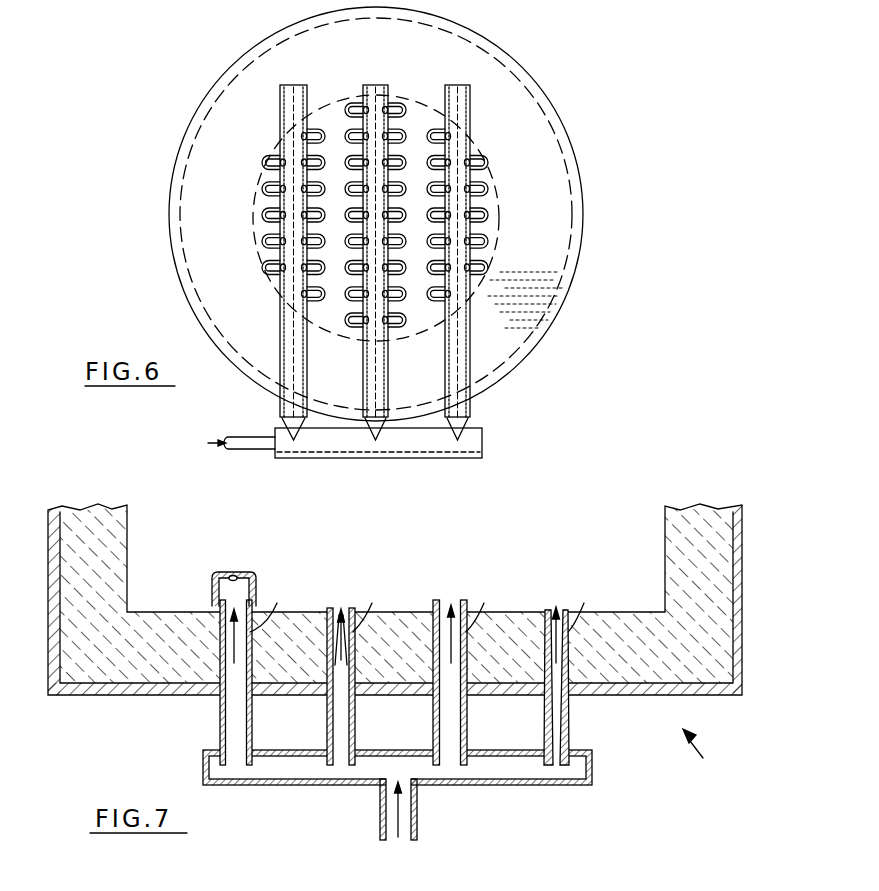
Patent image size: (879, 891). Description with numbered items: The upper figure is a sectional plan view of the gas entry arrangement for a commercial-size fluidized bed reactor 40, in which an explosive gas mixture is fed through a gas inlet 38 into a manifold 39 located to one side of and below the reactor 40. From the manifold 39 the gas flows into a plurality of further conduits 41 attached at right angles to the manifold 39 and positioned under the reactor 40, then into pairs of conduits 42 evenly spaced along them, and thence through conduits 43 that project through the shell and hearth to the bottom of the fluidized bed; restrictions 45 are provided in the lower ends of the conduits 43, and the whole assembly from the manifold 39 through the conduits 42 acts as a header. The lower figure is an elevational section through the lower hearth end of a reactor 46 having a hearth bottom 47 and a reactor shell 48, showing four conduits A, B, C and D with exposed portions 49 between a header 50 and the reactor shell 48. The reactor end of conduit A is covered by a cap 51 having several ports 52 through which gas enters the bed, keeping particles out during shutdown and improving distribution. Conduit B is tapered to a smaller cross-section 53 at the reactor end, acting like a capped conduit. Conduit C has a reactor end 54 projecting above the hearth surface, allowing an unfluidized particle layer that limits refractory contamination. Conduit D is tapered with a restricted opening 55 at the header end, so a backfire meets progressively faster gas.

In FIG. 6, the gas inlet 38 is at (248, 450).
In FIG. 6, the manifold 39 is at (383, 453).
In FIG. 6, the reactor 40 is at (541, 339).
In FIG. 6, the further conduits 41 is at (363, 364).
In FIG. 6, the pairs of conduits 42 is at (352, 111).
In FIG. 6, the conduits 43 is at (434, 136).
In FIG. 6, the restrictions 45 is at (268, 265).
In FIG. 7, the reactor 46 is at (709, 755).
In FIG. 7, the hearth bottom 47 is at (398, 590).
In FIG. 7, the reactor shell 48 is at (744, 506).
In FIG. 7, the exposed portions 49 is at (382, 647).
In FIG. 7, the header 50 is at (290, 786).
In FIG. 7, the cap 51 is at (255, 568).
In FIG. 7, the ports 52 is at (237, 579).
In FIG. 7, the smaller cross-section 53 is at (341, 609).
In FIG. 7, the reactor end 54 is at (461, 601).
In FIG. 7, the restricted opening 55 is at (557, 767).